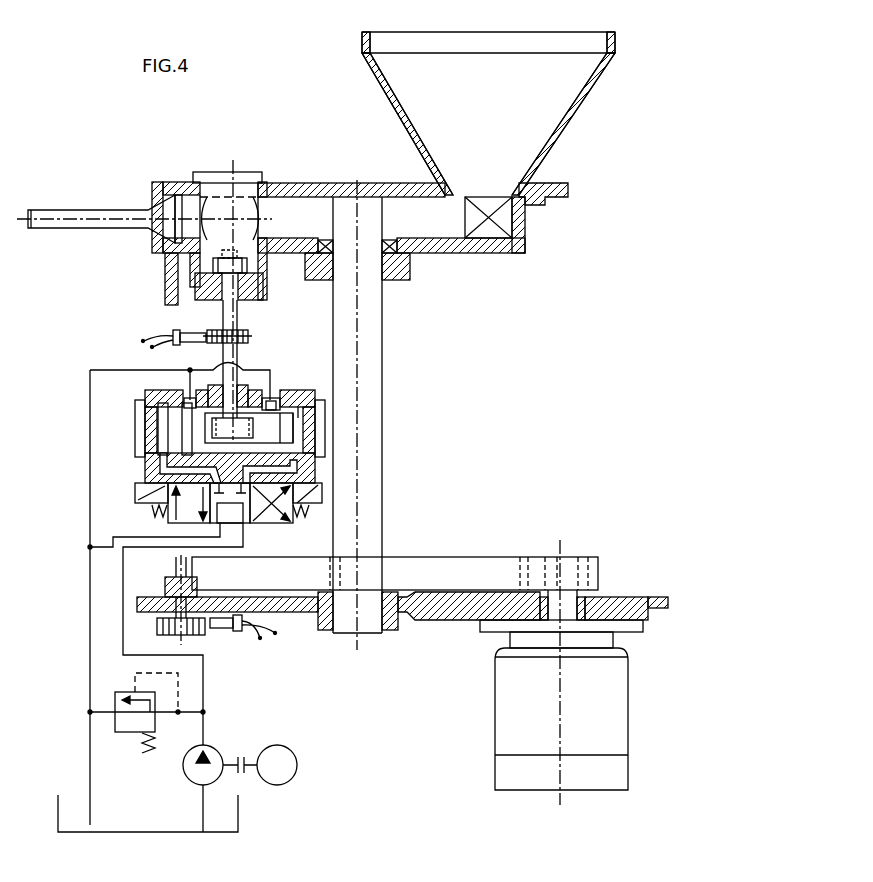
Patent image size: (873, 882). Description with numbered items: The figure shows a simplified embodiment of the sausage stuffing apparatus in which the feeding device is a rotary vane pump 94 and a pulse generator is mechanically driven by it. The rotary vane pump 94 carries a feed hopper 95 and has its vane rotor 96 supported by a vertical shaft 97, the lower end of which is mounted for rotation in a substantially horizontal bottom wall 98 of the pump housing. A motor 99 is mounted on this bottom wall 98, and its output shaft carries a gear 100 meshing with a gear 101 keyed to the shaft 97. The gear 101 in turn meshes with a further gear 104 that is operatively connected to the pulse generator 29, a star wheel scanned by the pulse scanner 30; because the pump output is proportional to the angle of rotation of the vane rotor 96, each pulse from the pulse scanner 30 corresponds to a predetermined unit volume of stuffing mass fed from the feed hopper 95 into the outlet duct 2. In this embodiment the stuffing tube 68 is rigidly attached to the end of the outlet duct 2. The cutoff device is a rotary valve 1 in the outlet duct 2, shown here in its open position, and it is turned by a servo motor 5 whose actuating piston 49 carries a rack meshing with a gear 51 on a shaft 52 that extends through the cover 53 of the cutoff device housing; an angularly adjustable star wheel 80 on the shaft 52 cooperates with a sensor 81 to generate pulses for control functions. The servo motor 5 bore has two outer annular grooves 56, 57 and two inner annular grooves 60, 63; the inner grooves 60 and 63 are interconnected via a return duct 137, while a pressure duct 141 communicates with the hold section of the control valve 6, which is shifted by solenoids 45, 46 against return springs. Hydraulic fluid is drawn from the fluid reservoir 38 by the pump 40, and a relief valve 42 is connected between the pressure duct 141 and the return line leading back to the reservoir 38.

The rotary valve 1 is at (234, 167).
The outlet duct 2 is at (190, 194).
The servo motor 5 is at (132, 469).
The control valve 6 is at (263, 530).
The pulse generator 29 is at (158, 628).
The pulse scanner 30 is at (225, 628).
The fluid reservoir 38 is at (232, 820).
The pump 40 is at (188, 774).
The relief valve 42 is at (128, 726).
The solenoid 45 is at (140, 504).
The solenoid 46 is at (312, 500).
The actuating piston 49 is at (296, 432).
The gear 51 is at (245, 428).
The shaft 52 is at (240, 350).
The cover 53 is at (258, 298).
The outer annular groove 56 is at (162, 405).
The outer annular groove 57 is at (297, 406).
The lefthand inner annular groove 60 is at (186, 398).
The righthand inner annular groove 63 is at (272, 398).
The stuffing tube 68 is at (56, 223).
The star wheel 80 is at (250, 338).
The sensor 81 is at (178, 333).
The rotary vane pump 94 is at (440, 297).
The feed hopper 95 is at (388, 95).
The vane rotor 96 is at (381, 195).
The vertical shaft 97 is at (380, 358).
The bottom wall 98 is at (440, 612).
The motor 99 is at (561, 672).
The gear 100 is at (598, 567).
The gear 101 is at (510, 567).
The further gear 104 is at (160, 586).
The return duct 137 is at (88, 705).
The pressure duct 141 is at (203, 706).